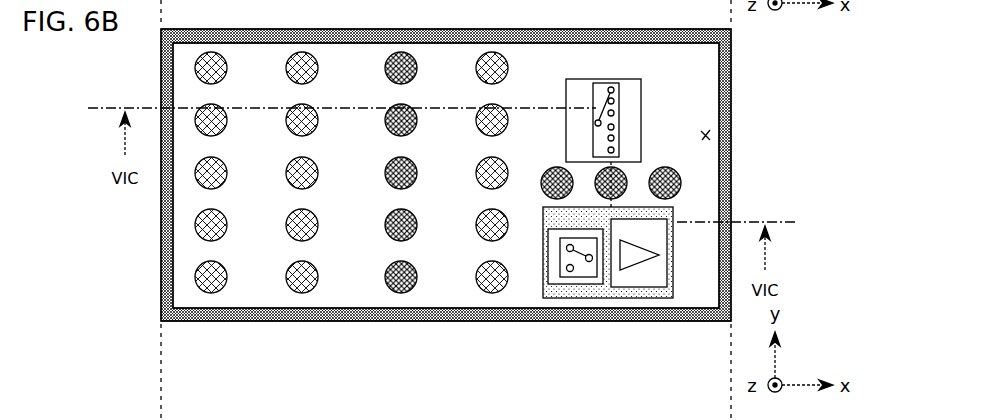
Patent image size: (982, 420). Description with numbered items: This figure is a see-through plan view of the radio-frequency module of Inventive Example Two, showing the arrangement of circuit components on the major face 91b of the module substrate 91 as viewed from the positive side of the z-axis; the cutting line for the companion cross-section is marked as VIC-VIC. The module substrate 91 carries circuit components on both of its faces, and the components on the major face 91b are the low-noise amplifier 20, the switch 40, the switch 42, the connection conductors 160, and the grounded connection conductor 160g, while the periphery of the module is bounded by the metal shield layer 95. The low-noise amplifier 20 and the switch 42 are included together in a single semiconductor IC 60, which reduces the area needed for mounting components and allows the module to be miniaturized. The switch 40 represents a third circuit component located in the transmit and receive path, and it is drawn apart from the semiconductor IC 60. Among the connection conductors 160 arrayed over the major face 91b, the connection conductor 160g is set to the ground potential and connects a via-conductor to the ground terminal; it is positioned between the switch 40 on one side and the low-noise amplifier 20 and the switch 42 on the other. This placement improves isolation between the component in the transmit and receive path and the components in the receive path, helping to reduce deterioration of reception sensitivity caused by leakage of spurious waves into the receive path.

The low-noise amplifier 20 is at (655, 276).
The switch 40 is at (620, 80).
The switch 42 is at (552, 278).
The semiconductor IC 60 is at (673, 217).
The module substrate 91 is at (712, 86).
The major face 91b is at (709, 134).
The metal shield layer 95 is at (726, 163).
The connection conductors 160 is at (294, 183).
The connection conductor 160g is at (407, 222).